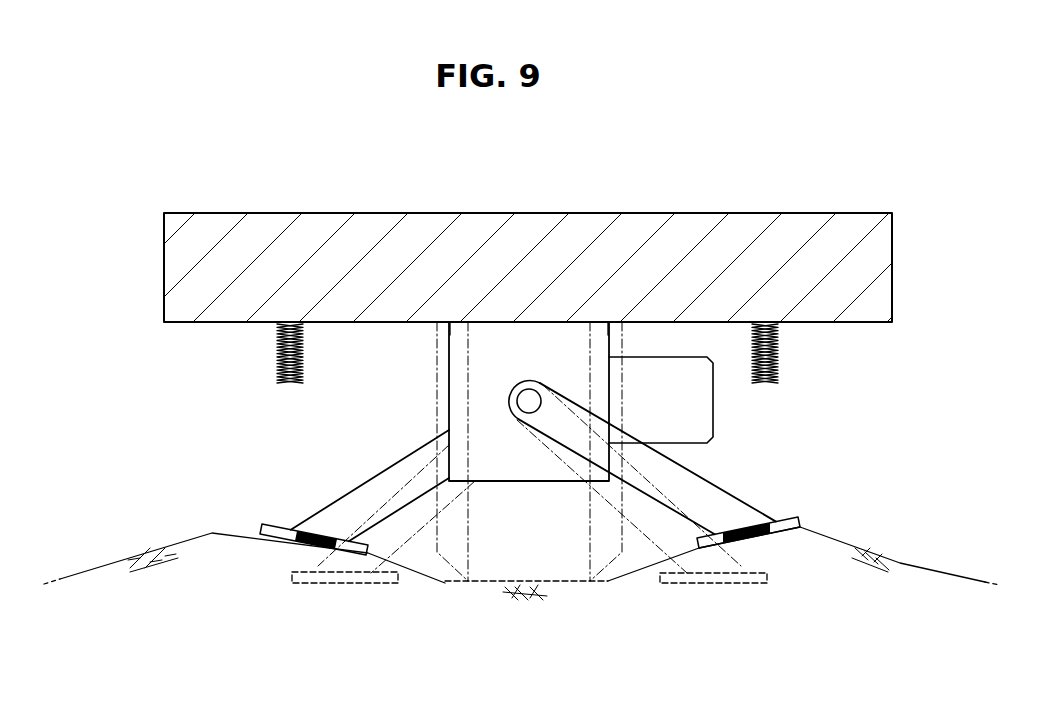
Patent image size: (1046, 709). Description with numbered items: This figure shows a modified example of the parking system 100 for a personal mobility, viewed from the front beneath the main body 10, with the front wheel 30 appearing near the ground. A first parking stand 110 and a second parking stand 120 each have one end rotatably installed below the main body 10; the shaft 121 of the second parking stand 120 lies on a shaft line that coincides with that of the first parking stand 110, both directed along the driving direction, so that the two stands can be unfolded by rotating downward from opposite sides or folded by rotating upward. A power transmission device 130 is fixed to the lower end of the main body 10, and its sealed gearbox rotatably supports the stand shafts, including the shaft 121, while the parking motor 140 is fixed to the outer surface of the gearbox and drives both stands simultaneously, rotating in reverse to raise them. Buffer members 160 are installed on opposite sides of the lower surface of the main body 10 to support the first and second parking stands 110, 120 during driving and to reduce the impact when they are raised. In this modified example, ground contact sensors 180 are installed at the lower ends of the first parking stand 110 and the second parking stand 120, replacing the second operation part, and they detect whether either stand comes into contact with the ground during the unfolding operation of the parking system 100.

The main body 10 is at (297, 228).
The front wheel 30 is at (443, 583).
The parking system 100 is at (226, 445).
The first parking stand 110 is at (397, 470).
The second parking stand 120 is at (718, 503).
The shaft of the second parking stand 121 is at (529, 398).
The power transmission device 130 is at (531, 500).
The parking motor 140 is at (693, 418).
The buffer members 160 is at (277, 357).
The ground contact sensors 180 is at (293, 541).